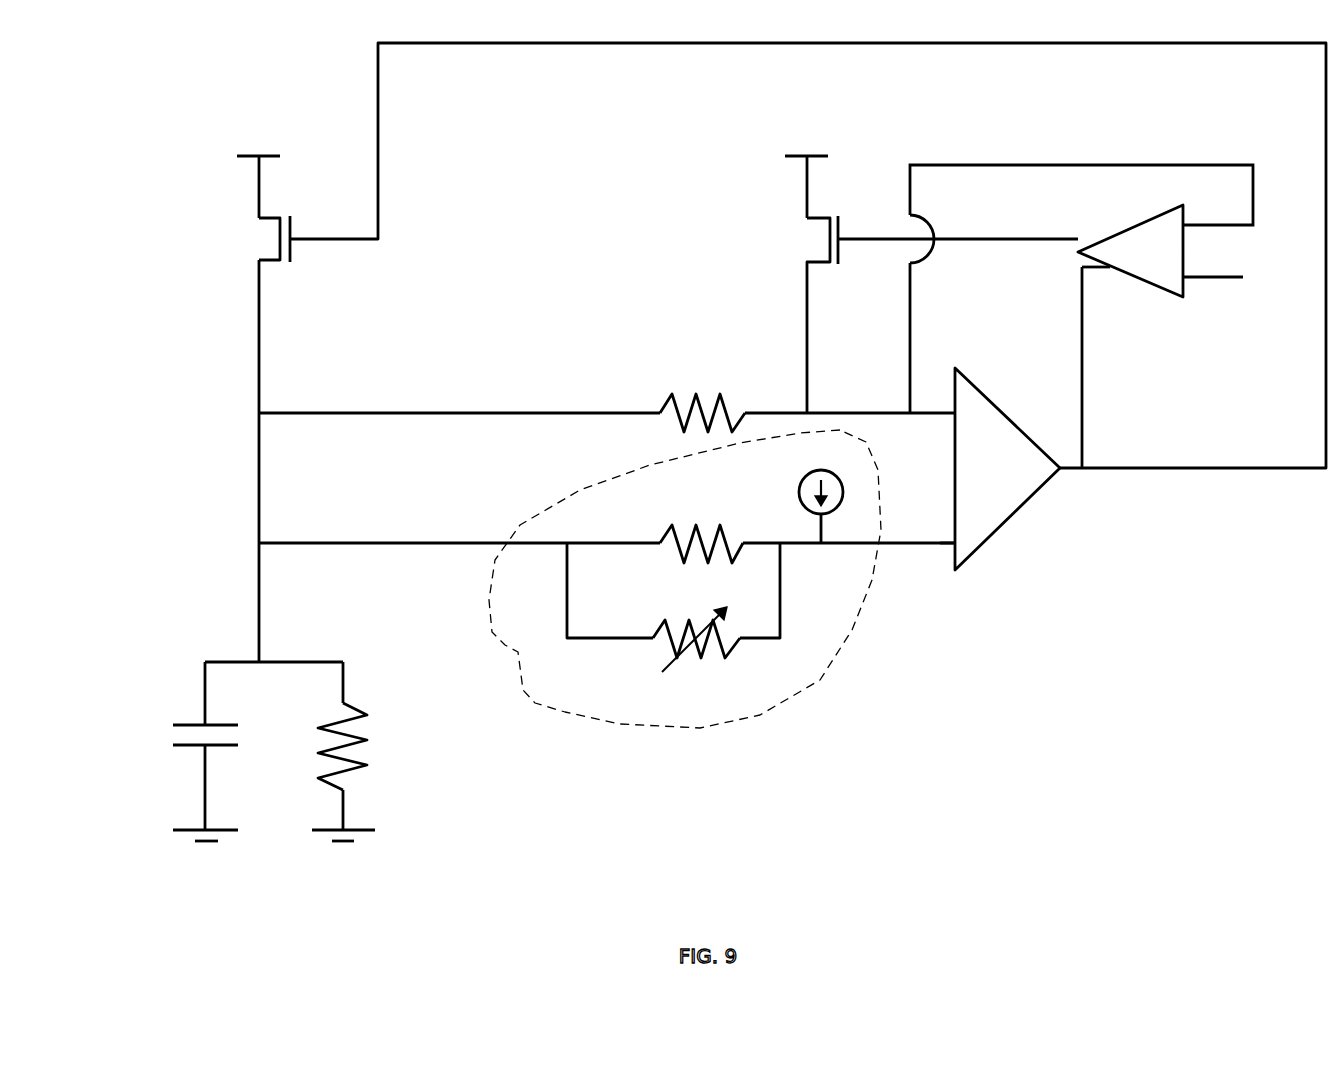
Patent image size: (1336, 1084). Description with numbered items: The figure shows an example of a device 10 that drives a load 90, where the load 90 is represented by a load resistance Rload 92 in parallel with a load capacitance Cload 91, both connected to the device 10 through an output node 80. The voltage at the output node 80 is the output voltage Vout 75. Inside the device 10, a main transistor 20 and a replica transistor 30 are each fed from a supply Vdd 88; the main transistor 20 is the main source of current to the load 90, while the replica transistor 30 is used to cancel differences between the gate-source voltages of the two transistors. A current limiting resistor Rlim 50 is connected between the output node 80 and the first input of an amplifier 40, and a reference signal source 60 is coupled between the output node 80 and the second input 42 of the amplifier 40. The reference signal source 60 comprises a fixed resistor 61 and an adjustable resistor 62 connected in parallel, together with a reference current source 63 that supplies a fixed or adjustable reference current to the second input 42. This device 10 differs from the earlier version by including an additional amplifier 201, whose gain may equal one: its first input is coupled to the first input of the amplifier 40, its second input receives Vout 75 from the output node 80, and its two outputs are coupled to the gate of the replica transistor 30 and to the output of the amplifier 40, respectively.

The device 10 is at (1000, 732).
The main transistor 20 is at (240, 240).
The replica transistor 30 is at (768, 212).
The amplifier 40 is at (993, 478).
The second input of amplifier 42 is at (953, 547).
The current limiting resistor 50 is at (670, 394).
The reference signal source 60 is at (703, 709).
The fixed resistor 61 is at (668, 525).
The adjustable resistor 62 is at (663, 622).
The reference current source 63 is at (832, 478).
The output voltage Vout 75 is at (1231, 265).
The output node 80 is at (258, 543).
The Vdd 88 is at (519, 130).
The load 90 is at (340, 635).
The load capacitance Cload 91 is at (188, 723).
The load resistance Rload 92 is at (356, 710).
The additional amplifier 201 is at (1113, 260).